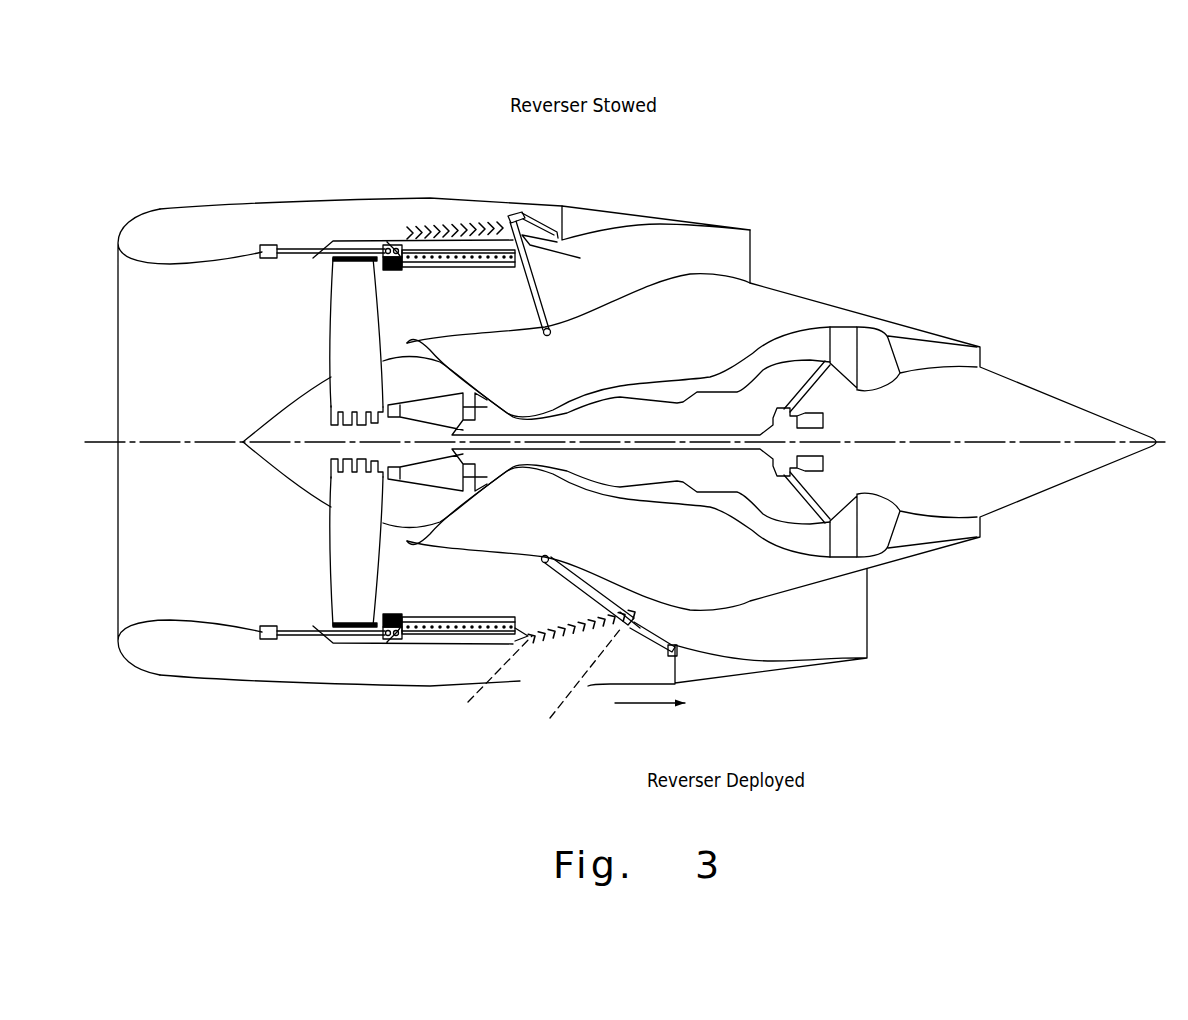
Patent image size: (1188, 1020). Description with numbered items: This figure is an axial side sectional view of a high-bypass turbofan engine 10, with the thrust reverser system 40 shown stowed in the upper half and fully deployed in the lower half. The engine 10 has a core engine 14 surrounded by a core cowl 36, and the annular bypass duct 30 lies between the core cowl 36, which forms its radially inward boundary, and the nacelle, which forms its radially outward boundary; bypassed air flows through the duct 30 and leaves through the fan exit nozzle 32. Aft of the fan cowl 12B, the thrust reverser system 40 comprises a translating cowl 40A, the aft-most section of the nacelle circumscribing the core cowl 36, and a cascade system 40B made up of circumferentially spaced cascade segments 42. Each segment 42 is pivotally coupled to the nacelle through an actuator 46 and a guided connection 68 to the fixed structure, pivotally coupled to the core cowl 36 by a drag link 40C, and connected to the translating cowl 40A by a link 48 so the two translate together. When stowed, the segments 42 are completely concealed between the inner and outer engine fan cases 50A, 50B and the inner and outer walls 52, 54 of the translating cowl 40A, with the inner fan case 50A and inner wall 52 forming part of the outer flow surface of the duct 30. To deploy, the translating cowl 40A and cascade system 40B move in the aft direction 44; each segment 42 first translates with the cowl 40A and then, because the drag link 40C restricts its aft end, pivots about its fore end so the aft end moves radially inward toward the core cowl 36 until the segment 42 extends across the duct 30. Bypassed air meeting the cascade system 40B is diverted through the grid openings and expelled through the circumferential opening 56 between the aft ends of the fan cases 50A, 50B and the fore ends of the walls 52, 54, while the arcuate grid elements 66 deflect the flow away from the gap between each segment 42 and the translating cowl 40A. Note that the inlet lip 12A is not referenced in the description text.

The high-bypass turbofan engine 10 is at (221, 143).
The nacelle inlet 12A is at (156, 215).
The fan cowl 12B is at (317, 196).
The core engine 14 is at (657, 366).
The bypass duct 30 is at (680, 257).
The fan exit nozzle 32 is at (757, 243).
The core cowl 36 is at (835, 300).
The thrust reverser system 40 is at (483, 186).
The translating cowl (transcowl) 40A is at (644, 205).
The cascade system 40B is at (430, 216).
The drag link 40C is at (540, 299).
The cascade segment 42 is at (463, 226).
The aft direction 44 is at (645, 710).
The actuator 46 is at (270, 260).
The link 48 is at (532, 216).
The inner engine fan case 50A is at (460, 268).
The outer engine fan case 50B is at (438, 197).
The inner wall of the transcowl 52 is at (558, 244).
The outer wall of the transcowl 54 is at (512, 201).
The circumferential opening 56 is at (513, 712).
The grid elements 66 is at (603, 633).
The guided connection 68 is at (398, 274).